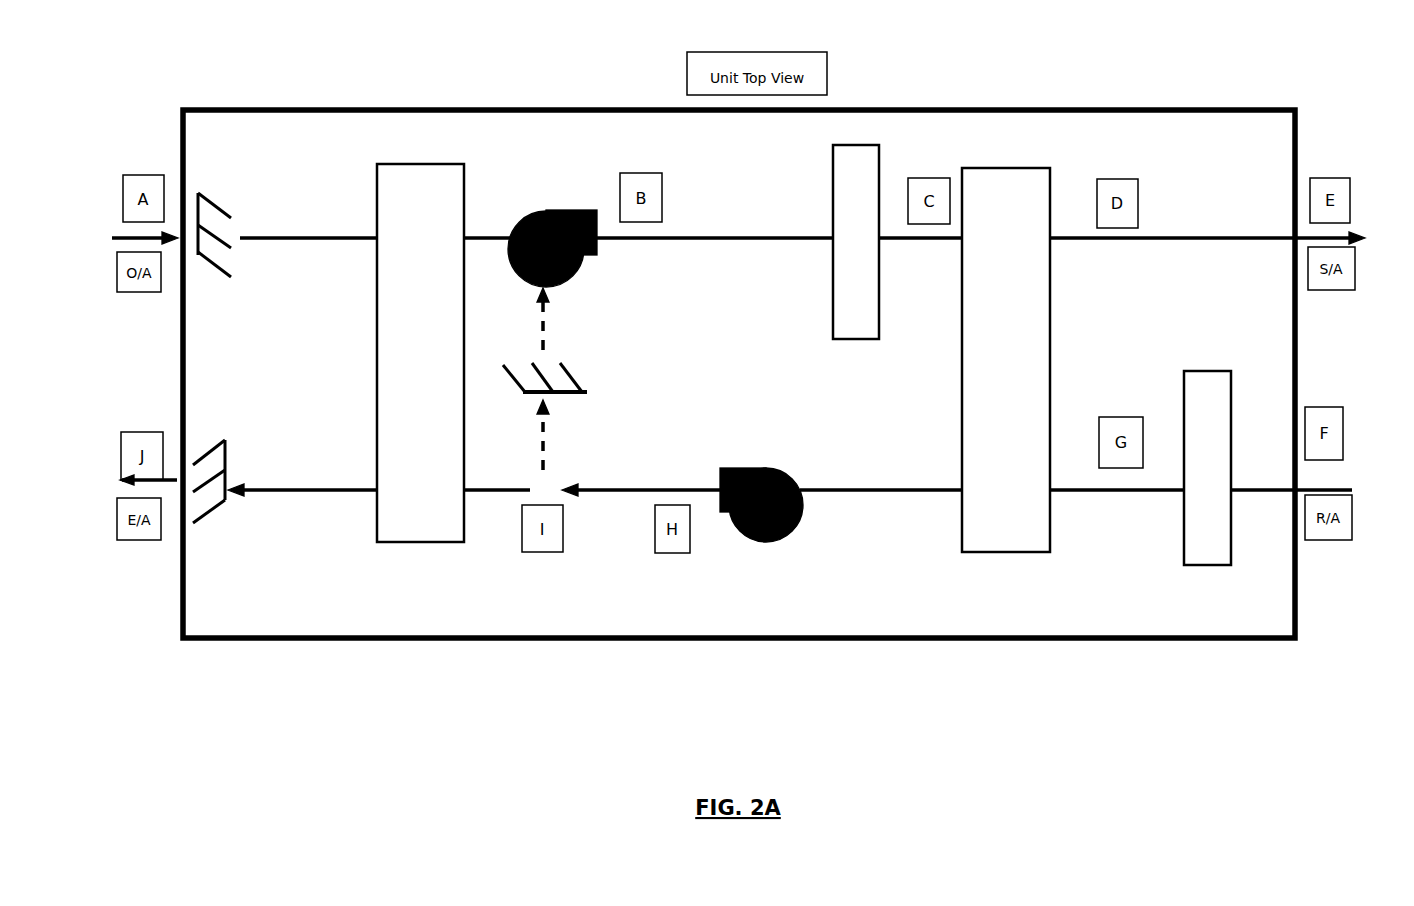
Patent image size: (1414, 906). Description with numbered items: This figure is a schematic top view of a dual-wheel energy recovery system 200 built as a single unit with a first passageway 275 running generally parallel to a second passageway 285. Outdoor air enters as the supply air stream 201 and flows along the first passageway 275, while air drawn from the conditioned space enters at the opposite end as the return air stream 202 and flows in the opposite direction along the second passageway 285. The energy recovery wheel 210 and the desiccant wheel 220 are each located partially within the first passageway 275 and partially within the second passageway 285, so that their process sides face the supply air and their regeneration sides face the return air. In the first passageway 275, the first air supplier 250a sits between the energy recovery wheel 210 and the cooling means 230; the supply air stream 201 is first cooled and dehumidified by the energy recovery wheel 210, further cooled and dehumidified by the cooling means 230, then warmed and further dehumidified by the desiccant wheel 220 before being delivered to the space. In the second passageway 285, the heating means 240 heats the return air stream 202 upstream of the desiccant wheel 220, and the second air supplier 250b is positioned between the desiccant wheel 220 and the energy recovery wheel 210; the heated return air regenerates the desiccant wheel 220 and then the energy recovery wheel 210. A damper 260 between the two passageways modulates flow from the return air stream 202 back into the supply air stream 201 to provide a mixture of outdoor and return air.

The system 200 is at (213, 90).
The supply air stream 201 is at (98, 222).
The return air stream 202 is at (1357, 480).
The energy recovery wheel 210 is at (420, 353).
The desiccant wheel 220 is at (1006, 360).
The cooling means 230 is at (856, 242).
The heating means 240 is at (1207, 468).
The first air supplier 250a is at (557, 205).
The second air supplier 250b is at (752, 465).
The damper 260 is at (583, 370).
The first passageway 275 is at (772, 232).
The second passageway 285 is at (872, 500).